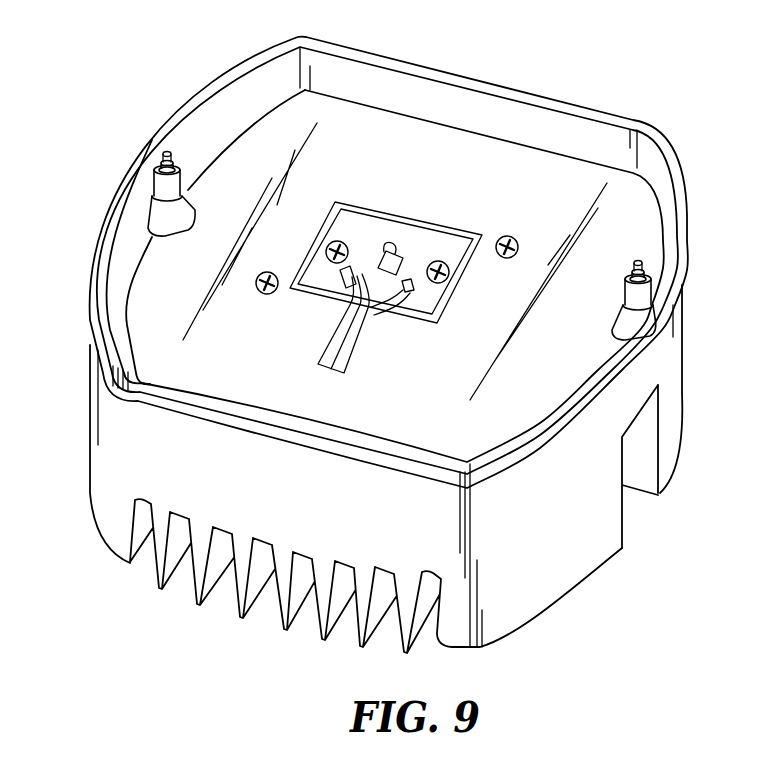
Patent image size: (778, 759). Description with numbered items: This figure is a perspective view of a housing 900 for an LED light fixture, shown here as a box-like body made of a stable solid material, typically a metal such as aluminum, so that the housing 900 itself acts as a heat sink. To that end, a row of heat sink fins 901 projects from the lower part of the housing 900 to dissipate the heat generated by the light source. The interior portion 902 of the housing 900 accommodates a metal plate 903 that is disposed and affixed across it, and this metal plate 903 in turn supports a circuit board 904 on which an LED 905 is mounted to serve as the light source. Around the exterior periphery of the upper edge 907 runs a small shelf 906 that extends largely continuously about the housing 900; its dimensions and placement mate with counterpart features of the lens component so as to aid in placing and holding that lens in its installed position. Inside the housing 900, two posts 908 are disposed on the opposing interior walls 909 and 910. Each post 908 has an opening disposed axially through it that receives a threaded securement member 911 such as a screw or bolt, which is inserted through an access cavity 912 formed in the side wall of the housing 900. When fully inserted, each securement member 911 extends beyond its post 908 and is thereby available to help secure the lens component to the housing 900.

The housing 900 is at (278, 678).
The heat sink fins 901 is at (162, 590).
The interior portion 902 is at (443, 100).
The metal plate 903 is at (162, 273).
The circuit board 904 is at (453, 247).
The LED 905 is at (388, 245).
The small shelf 906 is at (182, 413).
The upper edge 907 is at (358, 434).
The posts 908 is at (175, 187).
The interior wall 909 is at (668, 410).
The interior wall 910 is at (233, 98).
The threaded securement member 911 is at (163, 157).
The access cavity 912 is at (642, 455).